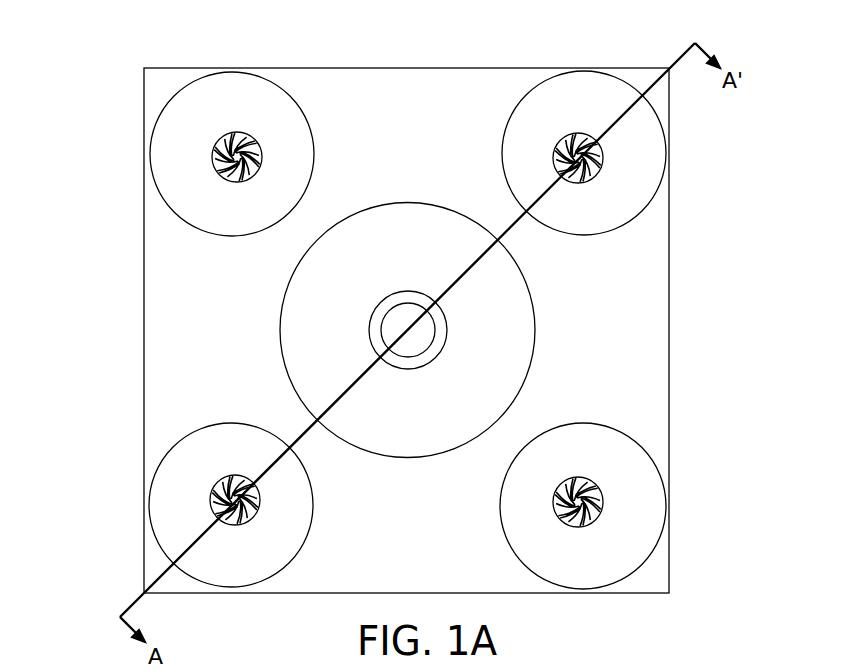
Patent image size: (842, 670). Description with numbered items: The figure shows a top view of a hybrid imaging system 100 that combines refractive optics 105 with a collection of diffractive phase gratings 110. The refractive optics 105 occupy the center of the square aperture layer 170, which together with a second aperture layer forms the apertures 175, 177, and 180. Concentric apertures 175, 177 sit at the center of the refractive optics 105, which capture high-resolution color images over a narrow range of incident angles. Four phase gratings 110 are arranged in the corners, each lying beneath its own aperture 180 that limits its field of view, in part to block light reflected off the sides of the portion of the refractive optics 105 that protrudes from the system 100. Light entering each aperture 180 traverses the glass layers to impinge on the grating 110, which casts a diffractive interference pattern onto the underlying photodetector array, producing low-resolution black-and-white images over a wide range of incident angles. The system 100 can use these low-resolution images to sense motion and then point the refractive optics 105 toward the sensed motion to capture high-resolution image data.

The hybrid imaging system 100 is at (133, 40).
The refractive optics 105 is at (393, 268).
The diffractive phase grating 110 is at (236, 182).
The aperture layer 170 is at (422, 140).
The aperture 175 is at (386, 293).
The aperture 177 is at (423, 351).
The aperture 180 is at (208, 116).